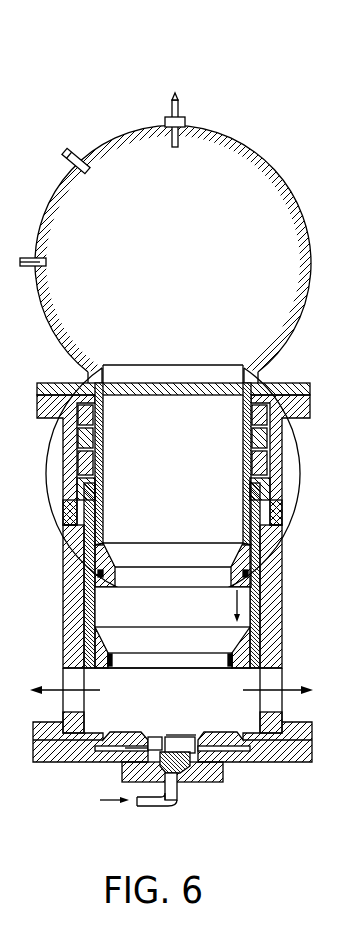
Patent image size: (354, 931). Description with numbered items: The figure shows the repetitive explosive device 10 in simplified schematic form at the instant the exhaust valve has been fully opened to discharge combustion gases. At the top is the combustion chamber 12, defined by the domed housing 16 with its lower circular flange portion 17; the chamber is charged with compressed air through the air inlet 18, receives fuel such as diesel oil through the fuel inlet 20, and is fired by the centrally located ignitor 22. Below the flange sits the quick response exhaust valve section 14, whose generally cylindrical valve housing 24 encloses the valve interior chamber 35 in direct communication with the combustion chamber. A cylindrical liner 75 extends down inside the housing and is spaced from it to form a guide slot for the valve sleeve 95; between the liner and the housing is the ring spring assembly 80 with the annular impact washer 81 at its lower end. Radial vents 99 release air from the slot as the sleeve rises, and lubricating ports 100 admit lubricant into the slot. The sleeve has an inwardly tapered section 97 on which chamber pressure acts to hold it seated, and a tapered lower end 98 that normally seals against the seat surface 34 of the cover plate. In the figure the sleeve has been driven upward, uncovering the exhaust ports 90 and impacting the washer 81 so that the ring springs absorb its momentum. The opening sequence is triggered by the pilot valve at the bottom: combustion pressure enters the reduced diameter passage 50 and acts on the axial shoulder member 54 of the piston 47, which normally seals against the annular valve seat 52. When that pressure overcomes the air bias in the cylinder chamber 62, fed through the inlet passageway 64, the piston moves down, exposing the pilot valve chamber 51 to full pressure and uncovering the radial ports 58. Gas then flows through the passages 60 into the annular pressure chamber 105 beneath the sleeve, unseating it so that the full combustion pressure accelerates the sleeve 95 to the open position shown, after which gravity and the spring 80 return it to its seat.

The repetitive explosive device 10 is at (255, 132).
The combustion chamber 12 is at (306, 214).
The housing 16 is at (295, 200).
The air inlet 18 is at (22, 254).
The fuel inlet 20 is at (83, 152).
The ignitor 22 is at (181, 112).
The lower circular flange portion 17 is at (289, 385).
The quick response exhaust valve section 14 is at (284, 427).
The valve housing 24 is at (283, 596).
The valve interior chamber 35 is at (188, 461).
The ring spring assembly 80 is at (264, 448).
The annular impact washer 81 is at (268, 484).
The radial vents 99 is at (273, 518).
The lubricating ports 100 is at (67, 520).
The cylindrical liner 75 is at (113, 560).
The tapered section of valve sleeve 97 is at (100, 641).
The valve sleeve 95 is at (258, 612).
The tapered lower end of sleeve 98 is at (107, 670).
The exhaust ports 90 is at (278, 674).
The seat surface 34 is at (99, 735).
The passages 60 is at (247, 753).
The annular pressure chamber 105 is at (93, 735).
The pilot valve chamber 51 is at (150, 750).
The annular valve seat 52 is at (157, 737).
The reduced diameter passage 50 is at (180, 737).
The axial shoulder member 54 is at (175, 733).
The radial ports 58 is at (220, 773).
The piston 47 is at (183, 764).
The cylinder chamber 62 is at (184, 782).
The inlet passageway 64 is at (147, 806).